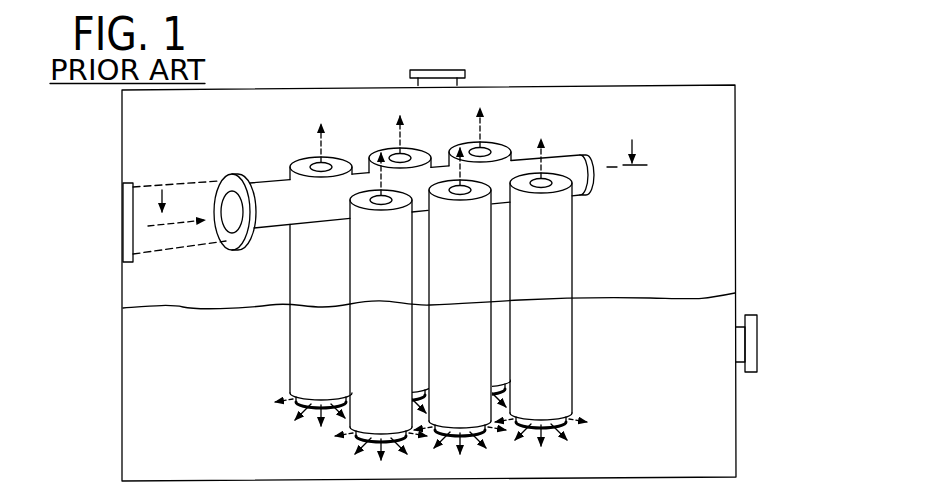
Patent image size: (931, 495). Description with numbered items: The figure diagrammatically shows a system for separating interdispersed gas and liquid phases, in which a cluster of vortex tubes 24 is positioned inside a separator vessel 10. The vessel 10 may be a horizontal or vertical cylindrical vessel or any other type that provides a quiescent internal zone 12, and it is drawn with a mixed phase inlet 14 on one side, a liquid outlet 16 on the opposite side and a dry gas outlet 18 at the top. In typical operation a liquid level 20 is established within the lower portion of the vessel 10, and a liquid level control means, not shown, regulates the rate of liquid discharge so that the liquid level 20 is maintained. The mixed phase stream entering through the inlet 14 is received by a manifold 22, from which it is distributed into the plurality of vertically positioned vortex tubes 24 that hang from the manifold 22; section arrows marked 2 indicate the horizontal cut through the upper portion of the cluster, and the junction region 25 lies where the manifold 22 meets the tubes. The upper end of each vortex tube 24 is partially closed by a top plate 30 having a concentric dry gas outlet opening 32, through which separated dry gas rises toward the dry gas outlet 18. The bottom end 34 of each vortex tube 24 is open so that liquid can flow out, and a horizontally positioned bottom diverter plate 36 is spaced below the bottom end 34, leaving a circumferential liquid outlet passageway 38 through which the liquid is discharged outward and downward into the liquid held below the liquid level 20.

The section line of FIG. 2 is at (401, 179).
The vessel 10 is at (737, 227).
The quiescent internal zone 12 is at (672, 244).
The mixed phase inlet 14 is at (123, 208).
The liquid outlet 16 is at (757, 333).
The dry gas outlet 18 is at (450, 68).
The liquid level 20 is at (183, 307).
The manifold 22 is at (267, 192).
The vortex tubes 24 is at (283, 175).
The manifold junction 25 is at (512, 163).
The top plate 30 is at (333, 158).
The dry gas outlet opening 32 is at (313, 163).
The bottom end 34 is at (310, 397).
The bottom diverter plate 36 is at (378, 437).
The circumferential liquid outlet passageway 38 is at (313, 410).